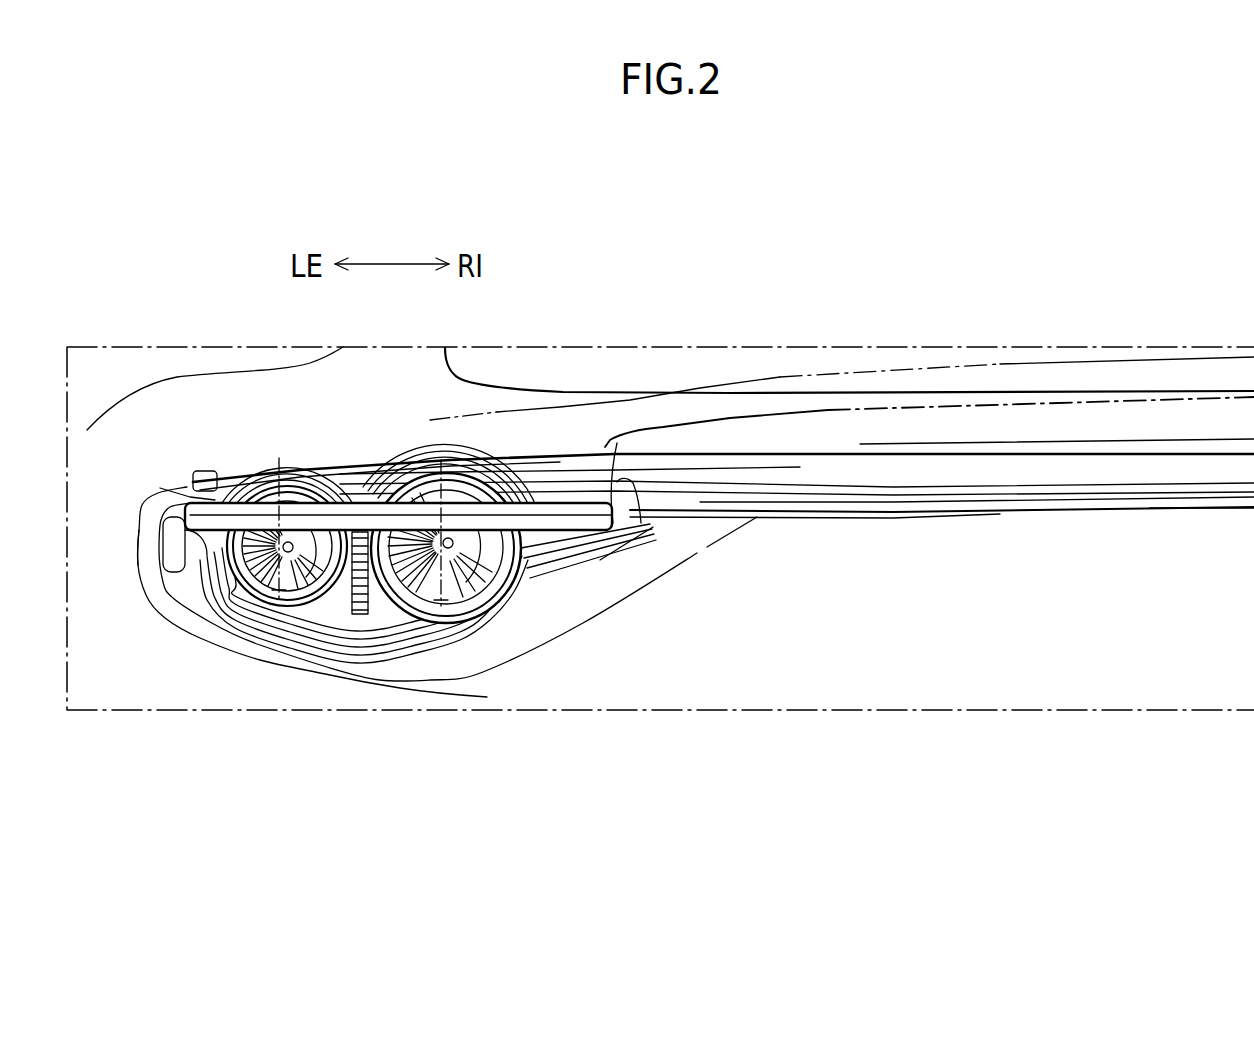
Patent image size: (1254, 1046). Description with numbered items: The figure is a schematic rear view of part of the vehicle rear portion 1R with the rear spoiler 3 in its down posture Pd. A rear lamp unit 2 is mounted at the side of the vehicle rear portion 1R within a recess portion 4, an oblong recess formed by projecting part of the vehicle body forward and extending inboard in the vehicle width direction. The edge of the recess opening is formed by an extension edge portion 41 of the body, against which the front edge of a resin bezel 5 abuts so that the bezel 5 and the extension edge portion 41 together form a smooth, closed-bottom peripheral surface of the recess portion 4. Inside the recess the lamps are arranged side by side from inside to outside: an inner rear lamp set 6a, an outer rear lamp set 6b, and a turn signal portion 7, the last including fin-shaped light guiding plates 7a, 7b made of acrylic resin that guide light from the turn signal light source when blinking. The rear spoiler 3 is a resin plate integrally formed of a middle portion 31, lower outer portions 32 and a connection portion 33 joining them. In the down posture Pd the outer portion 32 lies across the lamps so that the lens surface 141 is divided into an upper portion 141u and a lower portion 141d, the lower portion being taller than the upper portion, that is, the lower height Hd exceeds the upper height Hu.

The vehicle rear portion 1R is at (157, 327).
The rear lamp unit 2 is at (382, 648).
The rear spoiler 3 is at (968, 412).
The middle portion 31 is at (1057, 512).
The outer portion 32 is at (363, 507).
The connection portion 33 is at (610, 452).
The recess portion 4 is at (348, 661).
The extension edge portion 41 is at (177, 517).
The bezel 5 is at (157, 570).
The inner rear lamp set 6a is at (476, 618).
The outer rear lamp set 6b is at (257, 600).
The turn signal portion 7 is at (170, 493).
The fin-shaped light guiding plate 7a is at (194, 487).
The fin-shaped light guiding plate 7b is at (185, 540).
The lens surface 141 is at (313, 612).
The upper portion of lens surface 141u is at (257, 478).
The lower portion of lens surface 141d is at (223, 630).
The height of upper lens portion Hu is at (308, 480).
The height of lower lens portion Hd is at (284, 592).
The down posture Pd is at (1199, 510).